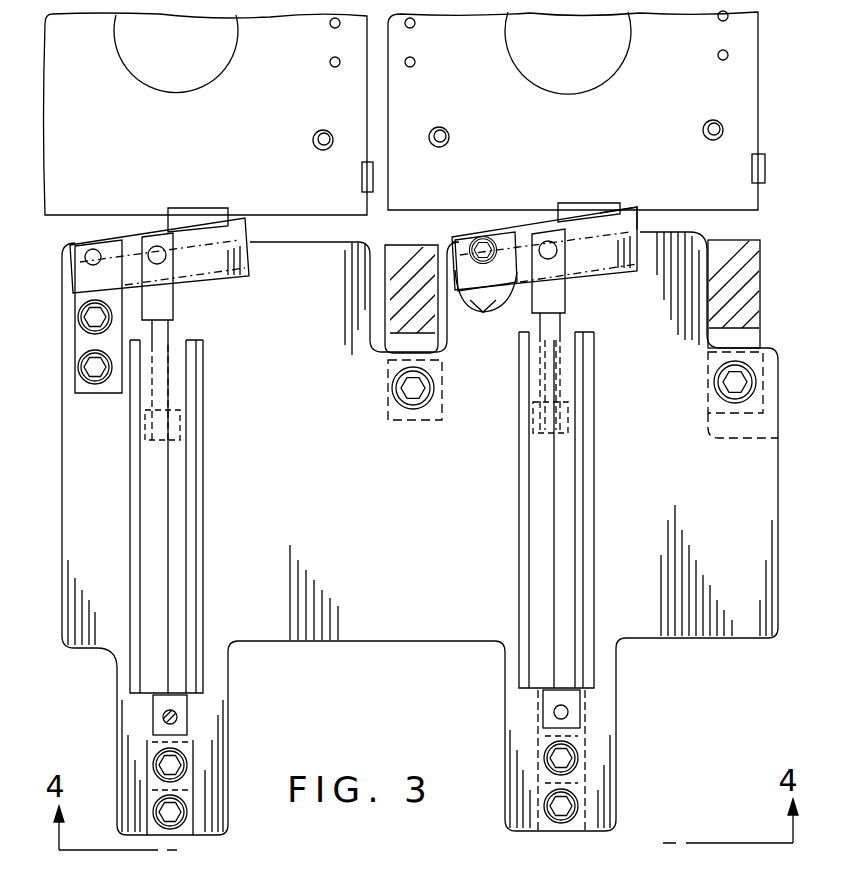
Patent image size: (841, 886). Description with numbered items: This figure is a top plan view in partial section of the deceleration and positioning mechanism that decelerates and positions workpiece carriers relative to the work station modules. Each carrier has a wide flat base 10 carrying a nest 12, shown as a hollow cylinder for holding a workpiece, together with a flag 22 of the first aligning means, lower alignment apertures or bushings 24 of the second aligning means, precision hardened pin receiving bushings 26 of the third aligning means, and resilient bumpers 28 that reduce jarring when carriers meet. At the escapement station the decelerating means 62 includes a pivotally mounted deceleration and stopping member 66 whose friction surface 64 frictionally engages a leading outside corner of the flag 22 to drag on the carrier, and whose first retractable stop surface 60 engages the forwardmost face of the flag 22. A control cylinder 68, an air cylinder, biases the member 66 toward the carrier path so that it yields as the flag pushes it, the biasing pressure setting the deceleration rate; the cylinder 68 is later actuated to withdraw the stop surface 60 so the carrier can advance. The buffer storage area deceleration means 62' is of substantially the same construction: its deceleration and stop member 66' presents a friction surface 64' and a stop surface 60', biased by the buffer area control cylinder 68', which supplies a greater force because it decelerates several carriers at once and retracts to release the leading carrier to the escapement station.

The base 10 is at (164, 147).
The nest 12 is at (167, 59).
The flag 22 is at (571, 207).
The lower alignment apertures or bushings 24 is at (315, 132).
The precision hardened pin receiving bushings 26 is at (329, 25).
The resilient bumpers 28 is at (360, 177).
The first retractable stop surface 60 is at (621, 196).
The stop surface 60' is at (207, 199).
The decelerating means 62 is at (547, 297).
The buffer storage area deceleration means 62' is at (174, 303).
The friction surface 64 is at (492, 238).
The friction surface 64' is at (106, 280).
The deceleration and stopping member 66 is at (544, 248).
The deceleration and stop member 66' is at (159, 255).
The control cylinder 68 is at (576, 581).
The buffer area control cylinder 68' is at (193, 587).